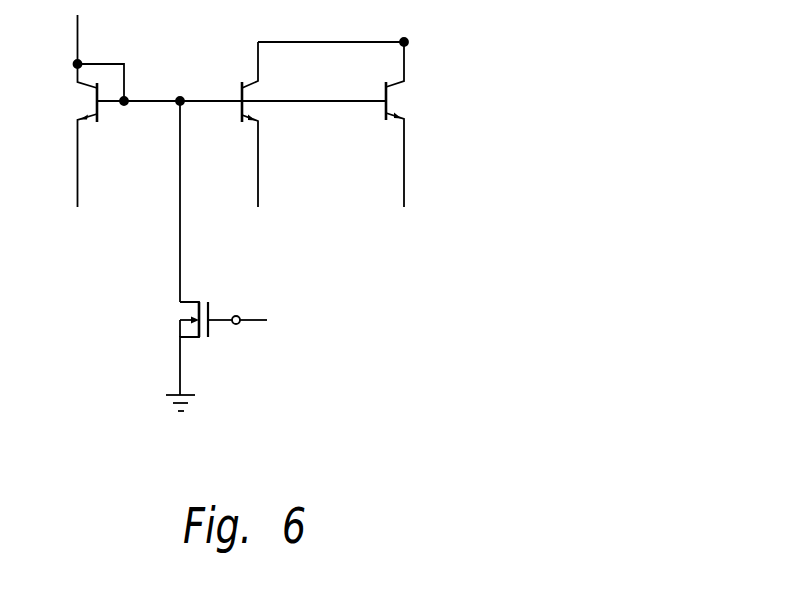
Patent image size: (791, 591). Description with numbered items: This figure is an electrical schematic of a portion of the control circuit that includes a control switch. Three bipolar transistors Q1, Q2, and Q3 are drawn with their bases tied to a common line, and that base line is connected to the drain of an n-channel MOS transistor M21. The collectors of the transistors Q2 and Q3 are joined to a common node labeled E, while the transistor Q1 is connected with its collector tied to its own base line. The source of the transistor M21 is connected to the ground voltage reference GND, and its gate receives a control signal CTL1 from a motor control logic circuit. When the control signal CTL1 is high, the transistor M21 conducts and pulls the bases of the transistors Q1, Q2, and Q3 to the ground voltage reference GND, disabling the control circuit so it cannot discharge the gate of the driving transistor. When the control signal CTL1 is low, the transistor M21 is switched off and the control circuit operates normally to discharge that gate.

The transistor Q1 is at (80, 85).
The transistor Q2 is at (244, 108).
The transistor Q3 is at (391, 86).
The n-channel MOS transistor M21 is at (186, 303).
The emitter/supply node E is at (417, 25).
The control signal CTL1 is at (265, 319).
The ground voltage reference GND is at (181, 418).